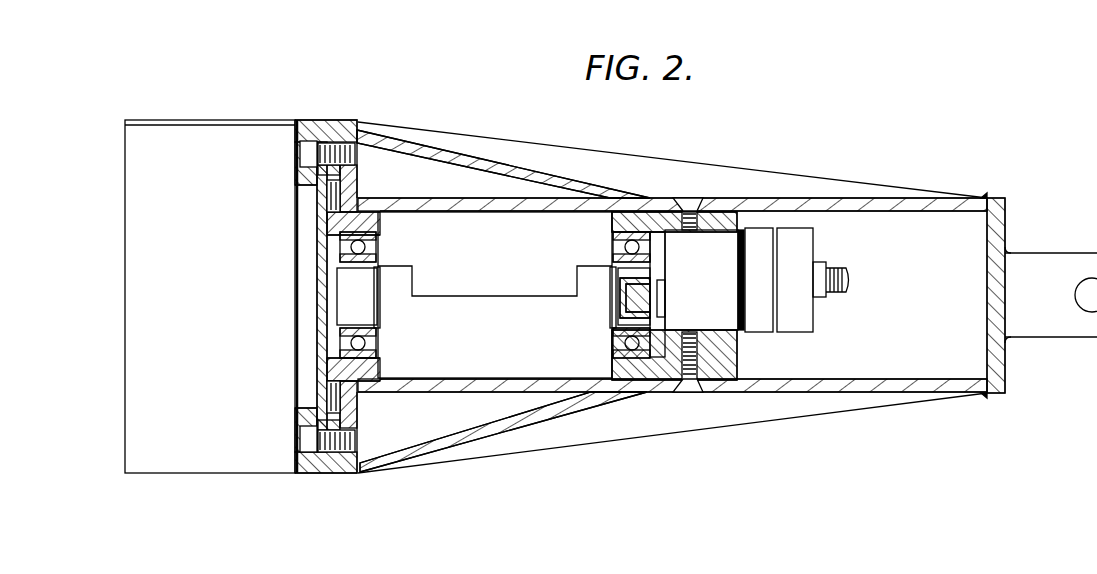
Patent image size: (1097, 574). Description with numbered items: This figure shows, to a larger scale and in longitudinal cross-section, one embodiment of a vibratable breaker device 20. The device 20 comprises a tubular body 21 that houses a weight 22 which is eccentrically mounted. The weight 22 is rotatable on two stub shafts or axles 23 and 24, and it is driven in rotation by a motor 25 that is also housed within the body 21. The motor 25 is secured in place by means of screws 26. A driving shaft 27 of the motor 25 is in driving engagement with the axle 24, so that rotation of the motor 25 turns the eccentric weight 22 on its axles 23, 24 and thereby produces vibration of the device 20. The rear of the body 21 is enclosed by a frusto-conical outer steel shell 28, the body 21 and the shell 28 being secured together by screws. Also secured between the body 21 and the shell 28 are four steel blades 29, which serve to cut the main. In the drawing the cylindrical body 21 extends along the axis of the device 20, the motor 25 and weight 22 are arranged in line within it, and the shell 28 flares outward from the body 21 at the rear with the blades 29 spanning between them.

The breaker device 20 is at (800, 173).
The tubular body 21 is at (784, 378).
The weight 22 is at (512, 349).
The stub shaft or axle 23 is at (343, 294).
The stub shaft or axle 24 is at (617, 277).
The motor 25 is at (716, 294).
The screws 26 is at (690, 210).
The driving shaft 27 is at (617, 297).
The frusto-conical outer steel shell 28 is at (442, 148).
The steel blades 29 is at (540, 153).